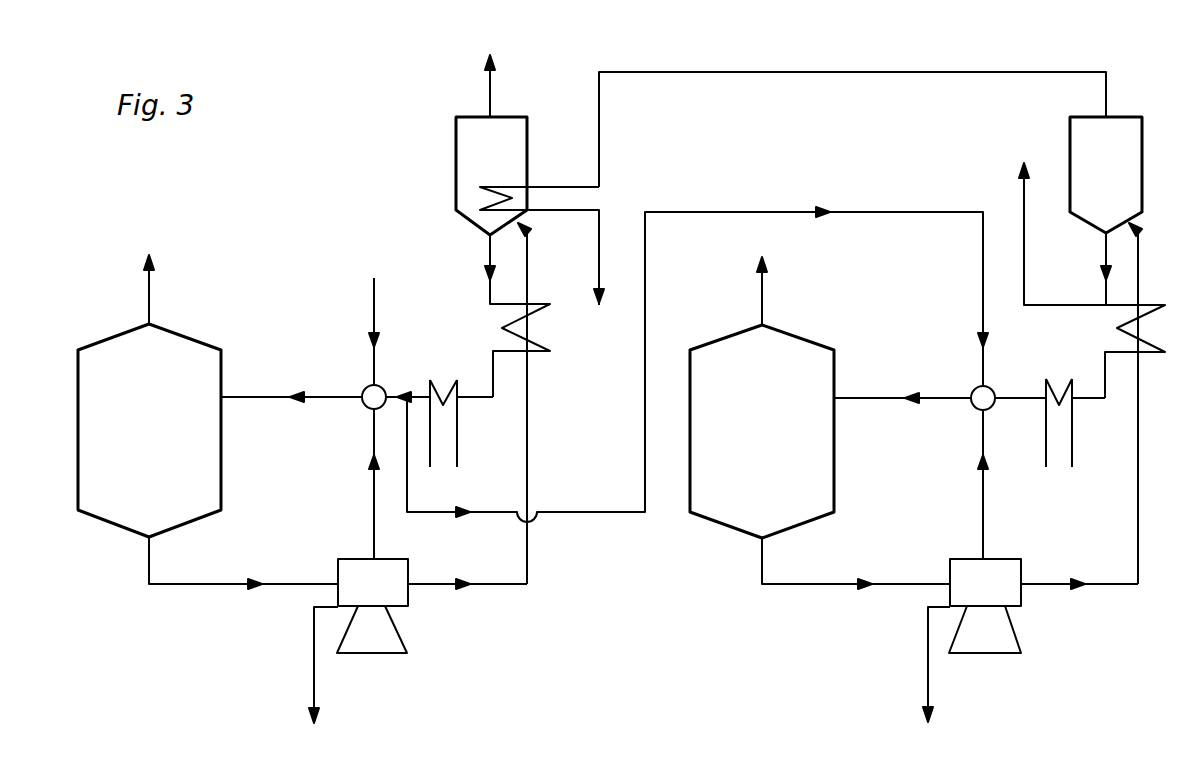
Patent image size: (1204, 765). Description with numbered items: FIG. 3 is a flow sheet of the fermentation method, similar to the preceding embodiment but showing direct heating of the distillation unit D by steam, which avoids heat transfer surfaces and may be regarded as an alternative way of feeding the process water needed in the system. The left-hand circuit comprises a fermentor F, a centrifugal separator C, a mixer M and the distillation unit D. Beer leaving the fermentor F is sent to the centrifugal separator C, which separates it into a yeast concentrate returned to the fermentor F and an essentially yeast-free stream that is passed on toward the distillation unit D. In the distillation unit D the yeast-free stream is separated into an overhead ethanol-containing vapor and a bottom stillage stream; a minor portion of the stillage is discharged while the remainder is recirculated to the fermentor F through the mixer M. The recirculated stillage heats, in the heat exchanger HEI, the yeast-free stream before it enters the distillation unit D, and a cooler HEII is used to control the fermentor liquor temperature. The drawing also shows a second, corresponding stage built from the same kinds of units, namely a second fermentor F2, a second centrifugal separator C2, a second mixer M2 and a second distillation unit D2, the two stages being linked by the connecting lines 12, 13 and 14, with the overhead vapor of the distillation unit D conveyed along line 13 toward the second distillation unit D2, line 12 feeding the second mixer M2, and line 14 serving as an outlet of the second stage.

The fermentor F is at (124, 505).
The mixer M is at (368, 391).
The cooler HEII is at (445, 387).
The heat exchanger HEI is at (535, 352).
The distillation unit D is at (473, 146).
The centrifugal separator C is at (388, 585).
The gas line 13 is at (853, 72).
The gas line 12 is at (790, 211).
The outlet line 14 is at (1022, 190).
The second separator D2 is at (1085, 135).
The second mixer M2 is at (978, 392).
The second fluidized bed reactor F2 is at (735, 508).
The second compressor C2 is at (1003, 587).